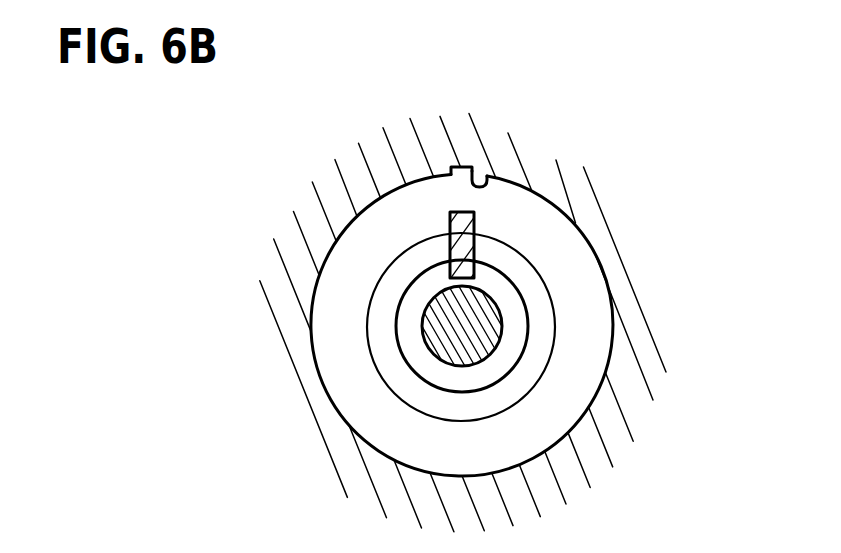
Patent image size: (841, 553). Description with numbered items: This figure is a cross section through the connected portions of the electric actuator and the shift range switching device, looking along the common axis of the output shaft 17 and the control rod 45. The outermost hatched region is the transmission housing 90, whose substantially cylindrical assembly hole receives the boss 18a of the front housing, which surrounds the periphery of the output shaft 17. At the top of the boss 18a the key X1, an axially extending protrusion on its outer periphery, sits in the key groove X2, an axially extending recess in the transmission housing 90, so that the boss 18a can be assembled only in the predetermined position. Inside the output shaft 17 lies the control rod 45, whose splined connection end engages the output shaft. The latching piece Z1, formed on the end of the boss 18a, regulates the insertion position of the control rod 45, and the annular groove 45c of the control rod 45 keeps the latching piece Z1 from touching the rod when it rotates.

The transmission housing 90 is at (373, 197).
The boss 18a is at (358, 405).
The output shaft 17 is at (387, 357).
The control rod 45 is at (478, 313).
The annular groove 45c is at (522, 320).
The latching piece Z1 is at (463, 260).
The key X1 is at (448, 165).
The key groove X2 is at (490, 177).